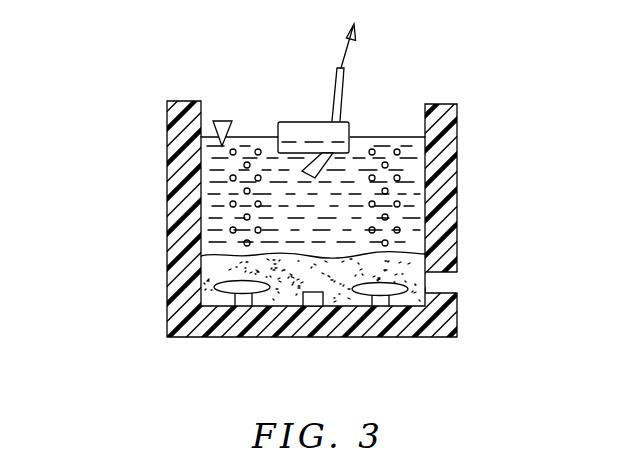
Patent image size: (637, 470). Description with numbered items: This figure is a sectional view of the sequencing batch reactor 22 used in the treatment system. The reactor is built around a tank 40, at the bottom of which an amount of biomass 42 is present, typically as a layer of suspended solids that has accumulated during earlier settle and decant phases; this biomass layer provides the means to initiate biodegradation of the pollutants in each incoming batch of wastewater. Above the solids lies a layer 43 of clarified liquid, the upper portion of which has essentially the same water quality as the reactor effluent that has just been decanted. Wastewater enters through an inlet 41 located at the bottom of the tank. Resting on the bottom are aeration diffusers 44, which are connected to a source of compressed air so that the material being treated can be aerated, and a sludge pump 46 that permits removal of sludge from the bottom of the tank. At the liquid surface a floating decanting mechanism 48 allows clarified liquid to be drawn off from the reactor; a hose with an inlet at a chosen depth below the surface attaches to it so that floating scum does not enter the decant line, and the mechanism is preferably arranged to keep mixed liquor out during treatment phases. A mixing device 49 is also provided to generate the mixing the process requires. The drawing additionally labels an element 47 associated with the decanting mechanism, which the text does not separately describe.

The sequencing batch reactor 22 is at (318, 220).
The tank 40 is at (177, 150).
The inlet 41 is at (455, 283).
The biomass 42 is at (210, 277).
The layer of clarified liquid 43 is at (408, 173).
The aeration diffusers 44 is at (240, 288).
The sludge pump 46 is at (313, 304).
The electrode 47 is at (303, 172).
The floating decanting mechanism 48 is at (318, 130).
The mixing device 49 is at (223, 119).